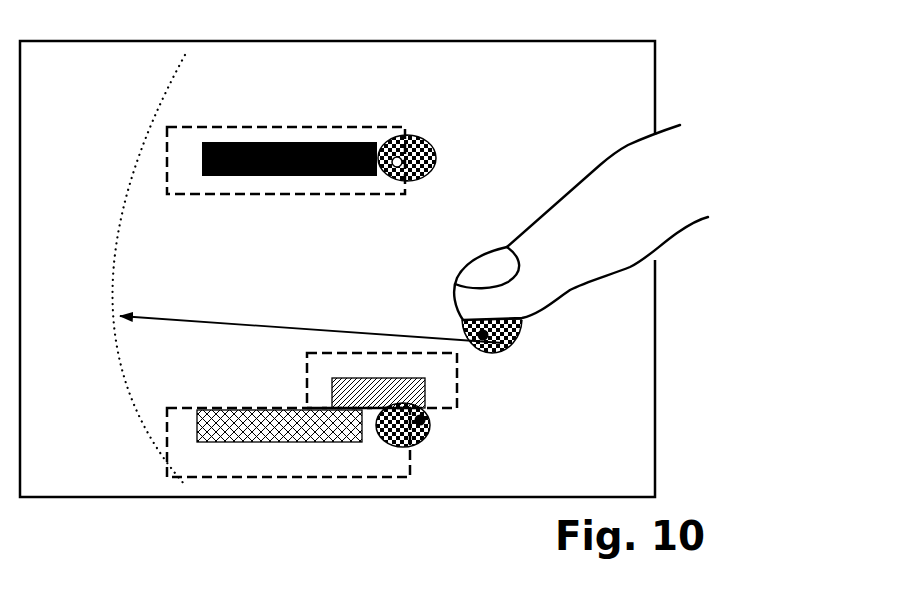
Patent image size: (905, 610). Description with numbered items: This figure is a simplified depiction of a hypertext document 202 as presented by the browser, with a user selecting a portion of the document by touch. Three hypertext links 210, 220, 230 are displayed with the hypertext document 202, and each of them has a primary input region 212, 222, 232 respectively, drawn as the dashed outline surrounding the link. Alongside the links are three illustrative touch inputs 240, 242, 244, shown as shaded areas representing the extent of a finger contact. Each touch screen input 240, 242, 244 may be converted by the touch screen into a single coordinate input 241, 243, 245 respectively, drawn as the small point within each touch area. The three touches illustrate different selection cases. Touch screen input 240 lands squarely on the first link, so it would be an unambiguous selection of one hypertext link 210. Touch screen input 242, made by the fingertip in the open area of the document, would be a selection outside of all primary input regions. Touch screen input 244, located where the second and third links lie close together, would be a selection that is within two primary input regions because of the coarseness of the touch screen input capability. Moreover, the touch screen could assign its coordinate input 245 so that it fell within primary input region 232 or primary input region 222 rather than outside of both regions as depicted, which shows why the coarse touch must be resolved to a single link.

The hypertext document 202 is at (50, 472).
The hypertext link 210 is at (232, 126).
The primary input region 212 is at (295, 126).
The hypertext link 220 is at (330, 403).
The primary input region 222 is at (446, 371).
The hypertext link 230 is at (198, 422).
The primary input region 232 is at (412, 474).
The touch screen input 240 is at (440, 152).
The coordinate input 241 is at (406, 166).
The touch screen input 242 is at (526, 337).
The coordinate input 243 is at (497, 345).
The touch screen input 244 is at (433, 422).
The coordinate input 245 is at (425, 426).